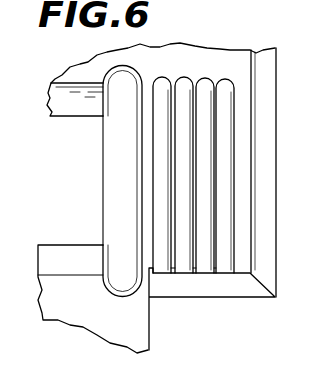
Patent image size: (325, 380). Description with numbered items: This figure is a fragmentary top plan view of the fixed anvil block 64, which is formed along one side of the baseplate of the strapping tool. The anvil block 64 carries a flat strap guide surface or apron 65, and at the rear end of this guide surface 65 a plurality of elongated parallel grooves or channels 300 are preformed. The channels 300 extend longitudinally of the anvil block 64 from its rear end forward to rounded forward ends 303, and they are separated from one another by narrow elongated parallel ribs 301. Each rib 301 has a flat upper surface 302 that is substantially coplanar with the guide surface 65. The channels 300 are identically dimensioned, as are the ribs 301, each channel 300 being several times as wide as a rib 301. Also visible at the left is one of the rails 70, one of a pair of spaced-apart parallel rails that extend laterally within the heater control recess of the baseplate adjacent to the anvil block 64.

The anvil block 64 is at (222, 288).
The strap guide surface 65 is at (243, 193).
The rail 70 is at (58, 253).
The channel 300 is at (185, 155).
The rib 301 is at (187, 205).
The flat upper surface 302 is at (190, 67).
The rounded forward end 303 is at (228, 80).